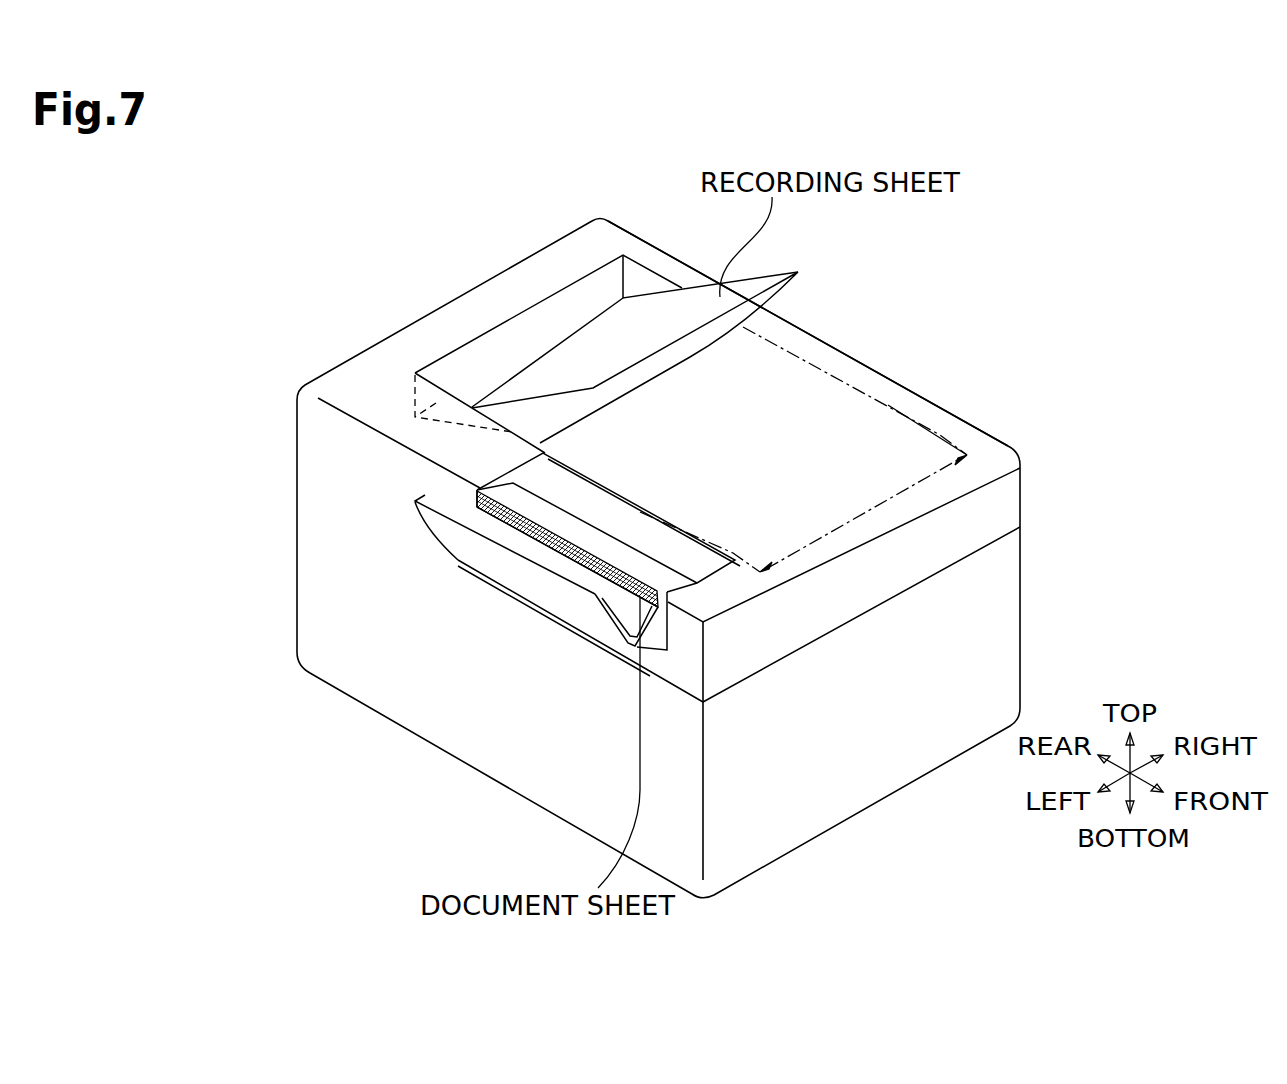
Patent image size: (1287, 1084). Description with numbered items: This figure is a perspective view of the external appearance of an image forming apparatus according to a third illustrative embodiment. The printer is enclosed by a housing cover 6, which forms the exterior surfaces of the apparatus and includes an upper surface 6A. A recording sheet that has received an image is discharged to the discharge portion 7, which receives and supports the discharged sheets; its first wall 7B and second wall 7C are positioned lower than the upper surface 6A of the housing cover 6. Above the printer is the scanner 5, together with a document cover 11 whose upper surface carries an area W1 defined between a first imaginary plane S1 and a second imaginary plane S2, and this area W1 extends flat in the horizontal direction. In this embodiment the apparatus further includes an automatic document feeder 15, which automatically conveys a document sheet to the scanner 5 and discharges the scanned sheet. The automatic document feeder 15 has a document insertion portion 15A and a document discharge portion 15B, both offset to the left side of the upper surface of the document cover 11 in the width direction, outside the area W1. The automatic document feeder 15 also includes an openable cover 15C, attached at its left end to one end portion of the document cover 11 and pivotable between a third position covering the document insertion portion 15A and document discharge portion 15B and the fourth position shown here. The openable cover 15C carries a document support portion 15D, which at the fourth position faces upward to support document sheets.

The scanner 5 is at (1003, 490).
The housing cover 6 is at (1023, 612).
The upper surface 6A is at (597, 243).
The discharge portion 7 is at (507, 347).
The first wall 7B is at (436, 403).
The second wall 7C is at (638, 280).
The document cover 11 is at (862, 354).
The automatic document feeder 15 is at (482, 476).
The document insertion portion 15A is at (603, 570).
The document discharge portion 15B is at (593, 553).
The openable cover 15C is at (450, 535).
The document support portion 15D is at (526, 550).
The first imaginary plane S1 is at (733, 553).
The second imaginary plane S2 is at (940, 433).
The area W1 is at (863, 513).